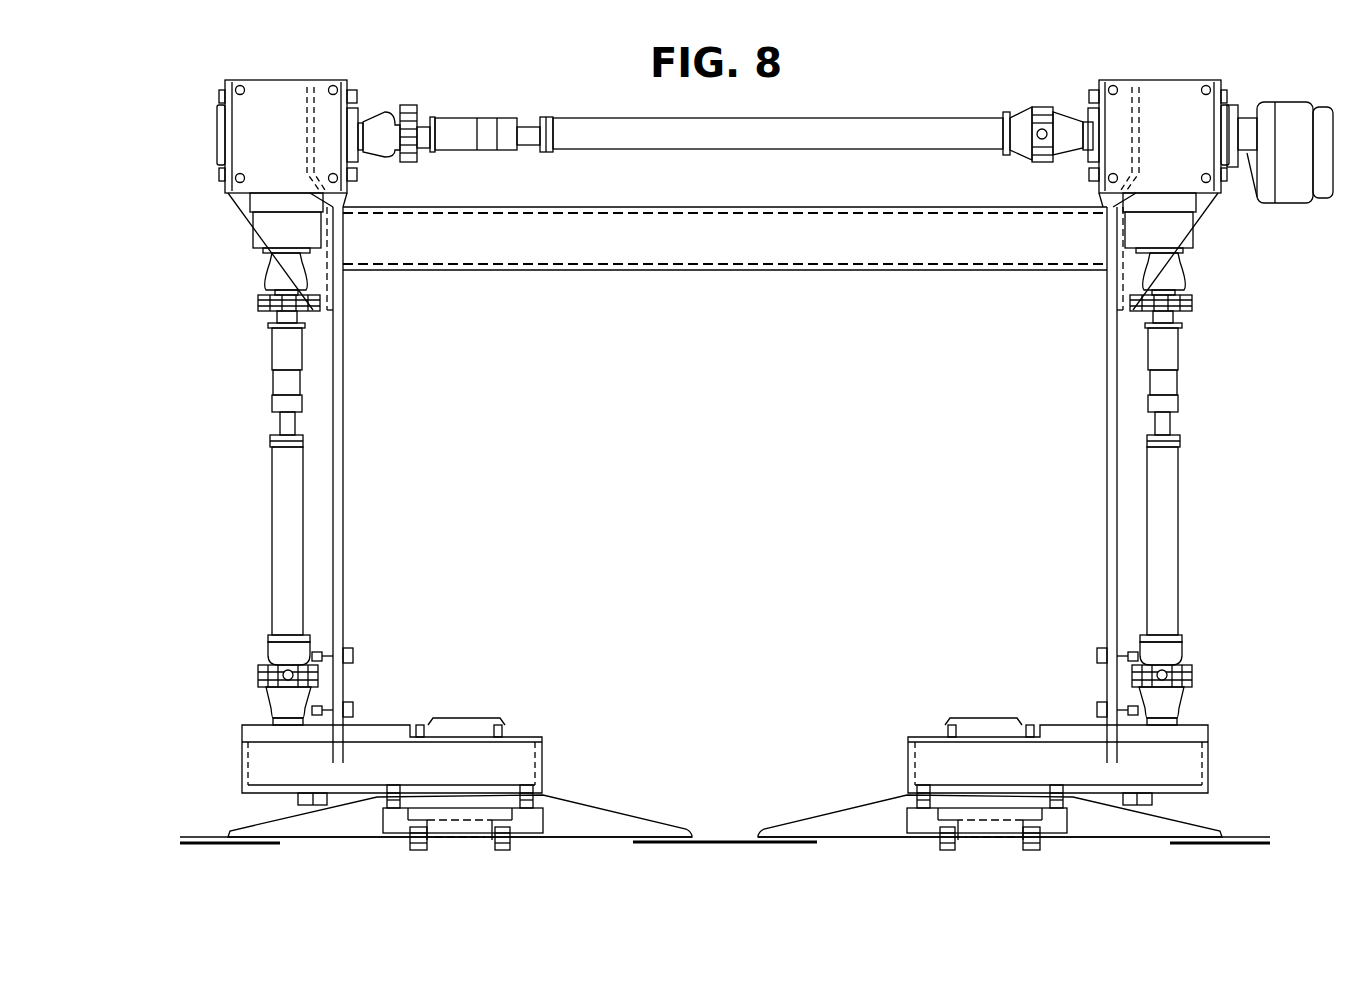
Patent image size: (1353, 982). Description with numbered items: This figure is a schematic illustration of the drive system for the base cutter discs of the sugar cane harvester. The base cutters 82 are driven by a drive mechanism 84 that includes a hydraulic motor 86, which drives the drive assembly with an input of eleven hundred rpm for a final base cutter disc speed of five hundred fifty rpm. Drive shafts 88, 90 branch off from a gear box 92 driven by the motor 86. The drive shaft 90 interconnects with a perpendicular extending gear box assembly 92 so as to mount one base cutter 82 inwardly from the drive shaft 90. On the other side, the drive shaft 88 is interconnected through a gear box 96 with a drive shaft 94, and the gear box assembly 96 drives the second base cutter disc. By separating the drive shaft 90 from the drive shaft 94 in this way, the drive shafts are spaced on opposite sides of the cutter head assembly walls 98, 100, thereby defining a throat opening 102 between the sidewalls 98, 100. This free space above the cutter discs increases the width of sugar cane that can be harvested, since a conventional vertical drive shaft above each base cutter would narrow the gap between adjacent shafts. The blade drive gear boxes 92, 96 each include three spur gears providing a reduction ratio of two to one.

The base cutter 82 is at (320, 823).
The drive mechanism 84 is at (196, 211).
The hydraulic motor 86 is at (1293, 195).
The drive shaft 88 is at (912, 128).
The drive shaft 90 is at (1172, 528).
The gear box 92 is at (1175, 87).
The drive shaft 94 is at (280, 528).
The gear box 96 is at (272, 87).
The cutter head assembly wall 98 is at (343, 491).
The cutter head assembly wall 100 is at (1107, 492).
The throat opening 102 is at (740, 467).